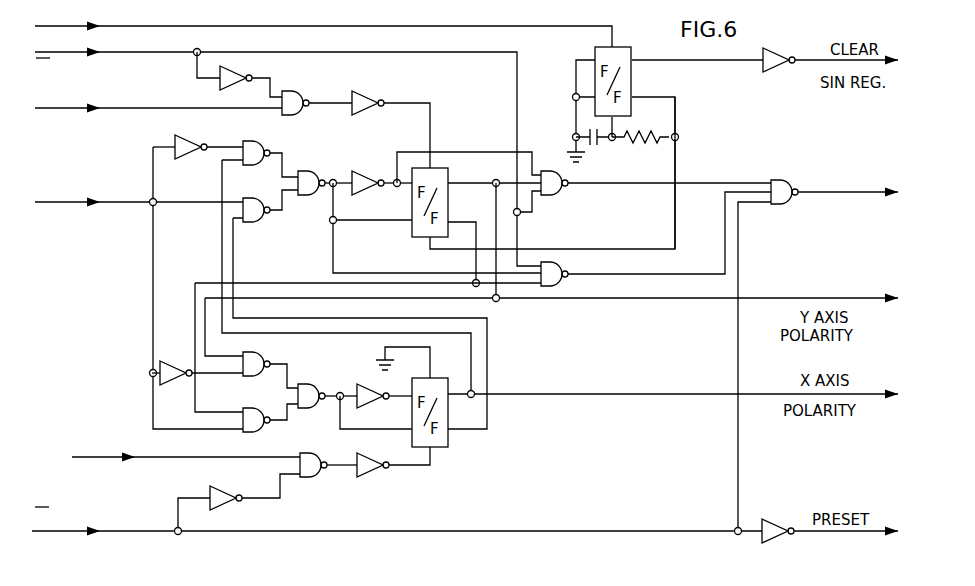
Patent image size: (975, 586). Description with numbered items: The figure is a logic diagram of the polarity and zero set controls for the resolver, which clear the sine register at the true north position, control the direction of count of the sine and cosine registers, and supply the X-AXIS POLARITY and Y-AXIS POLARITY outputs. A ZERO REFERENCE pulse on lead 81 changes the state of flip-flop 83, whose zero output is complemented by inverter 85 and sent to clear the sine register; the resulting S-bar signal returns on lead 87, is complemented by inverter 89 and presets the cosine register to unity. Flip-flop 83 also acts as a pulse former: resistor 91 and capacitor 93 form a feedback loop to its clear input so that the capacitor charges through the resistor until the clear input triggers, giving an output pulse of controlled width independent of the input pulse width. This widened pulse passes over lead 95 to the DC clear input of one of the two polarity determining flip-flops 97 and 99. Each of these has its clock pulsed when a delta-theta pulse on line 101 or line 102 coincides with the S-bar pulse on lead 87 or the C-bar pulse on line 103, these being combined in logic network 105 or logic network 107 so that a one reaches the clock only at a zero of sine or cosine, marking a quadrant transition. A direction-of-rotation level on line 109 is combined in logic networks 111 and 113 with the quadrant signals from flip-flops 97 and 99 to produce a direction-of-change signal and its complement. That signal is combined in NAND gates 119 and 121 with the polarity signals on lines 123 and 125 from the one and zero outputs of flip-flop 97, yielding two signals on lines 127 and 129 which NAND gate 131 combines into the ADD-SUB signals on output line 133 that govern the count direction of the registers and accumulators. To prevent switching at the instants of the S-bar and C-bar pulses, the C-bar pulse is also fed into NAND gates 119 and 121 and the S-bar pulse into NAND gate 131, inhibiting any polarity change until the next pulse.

The lead 81 is at (246, 27).
The flip-flop 83 is at (594, 50).
The inverter 85 is at (777, 72).
The lead 87 is at (138, 529).
The inverter 89 is at (772, 519).
The resistor 91 is at (641, 148).
The capacitor 93 is at (595, 147).
The lead 95 is at (677, 152).
The polarity determining flip-flop 97 is at (408, 228).
The polarity determining flip-flop 99 is at (443, 440).
The line 101 is at (77, 110).
The line 102 is at (107, 459).
The line 103 is at (120, 53).
The logic network 105 is at (235, 478).
The logic network 107 is at (241, 84).
The line 109 is at (78, 204).
The logic network 111 is at (269, 188).
The logic network 113 is at (268, 402).
The NAND gate 119 is at (552, 193).
The NAND gate 121 is at (565, 264).
The line 123 is at (476, 181).
The line 125 is at (477, 223).
The line 127 is at (715, 181).
The line 129 is at (710, 264).
The NAND gate 131 is at (779, 182).
The output line 133 is at (828, 192).